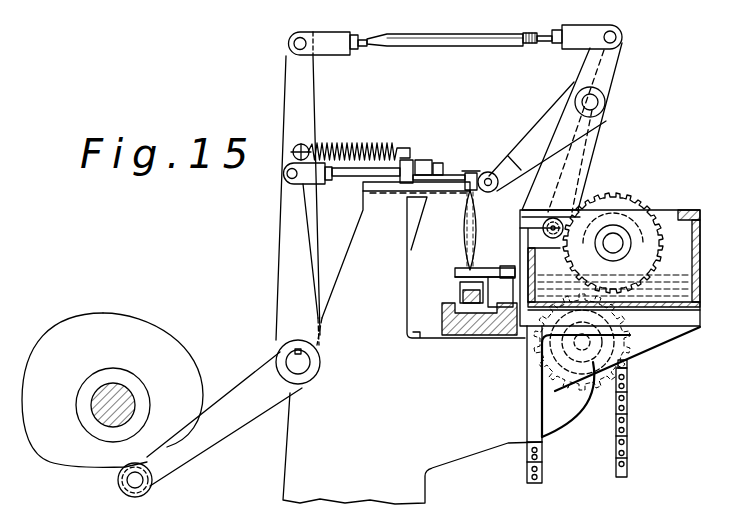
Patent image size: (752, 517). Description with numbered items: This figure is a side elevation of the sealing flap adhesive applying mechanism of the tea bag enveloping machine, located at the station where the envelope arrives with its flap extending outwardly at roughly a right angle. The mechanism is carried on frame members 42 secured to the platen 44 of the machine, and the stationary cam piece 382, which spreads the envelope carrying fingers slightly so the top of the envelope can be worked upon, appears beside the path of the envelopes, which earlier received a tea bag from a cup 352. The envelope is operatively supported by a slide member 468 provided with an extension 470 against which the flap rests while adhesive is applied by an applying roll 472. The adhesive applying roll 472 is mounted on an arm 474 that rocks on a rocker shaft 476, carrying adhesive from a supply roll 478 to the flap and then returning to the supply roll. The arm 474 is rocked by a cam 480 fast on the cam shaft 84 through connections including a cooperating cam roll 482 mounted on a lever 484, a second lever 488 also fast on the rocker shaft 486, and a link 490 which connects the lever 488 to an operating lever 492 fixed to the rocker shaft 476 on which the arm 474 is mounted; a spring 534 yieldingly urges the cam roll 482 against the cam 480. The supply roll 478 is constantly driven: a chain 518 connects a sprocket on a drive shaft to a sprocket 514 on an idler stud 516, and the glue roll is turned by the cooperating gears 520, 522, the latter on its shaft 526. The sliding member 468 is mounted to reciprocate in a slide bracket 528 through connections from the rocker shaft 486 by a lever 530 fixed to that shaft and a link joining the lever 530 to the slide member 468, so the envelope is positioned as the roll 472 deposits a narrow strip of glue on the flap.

The frame members 42 is at (461, 338).
The platen 44 is at (458, 455).
The cam shaft 84 is at (106, 428).
The cup 352 is at (363, 166).
The stationary cam piece 382 is at (512, 288).
The slide member 468 is at (478, 180).
The extension 470 is at (490, 170).
The adhesive applying roll 472 is at (498, 190).
The arm 474 is at (558, 112).
The rocker shaft 476 is at (597, 100).
The supply roll 478 is at (633, 208).
The cam 480 is at (170, 338).
The cam roll 482 is at (140, 498).
The lever 484 is at (210, 447).
The rocker shaft 486 is at (305, 369).
The second lever 488 is at (286, 100).
The link 490 is at (447, 48).
The operating lever 492 is at (603, 63).
The sprocket 514 is at (612, 370).
The idler stud 516 is at (600, 352).
The chain 518 is at (628, 408).
The gear 520 is at (640, 336).
The gear 522 is at (628, 236).
The shaft 526 is at (632, 243).
The slide bracket 528 is at (352, 236).
The lever 530 is at (279, 287).
The spring 534 is at (328, 147).